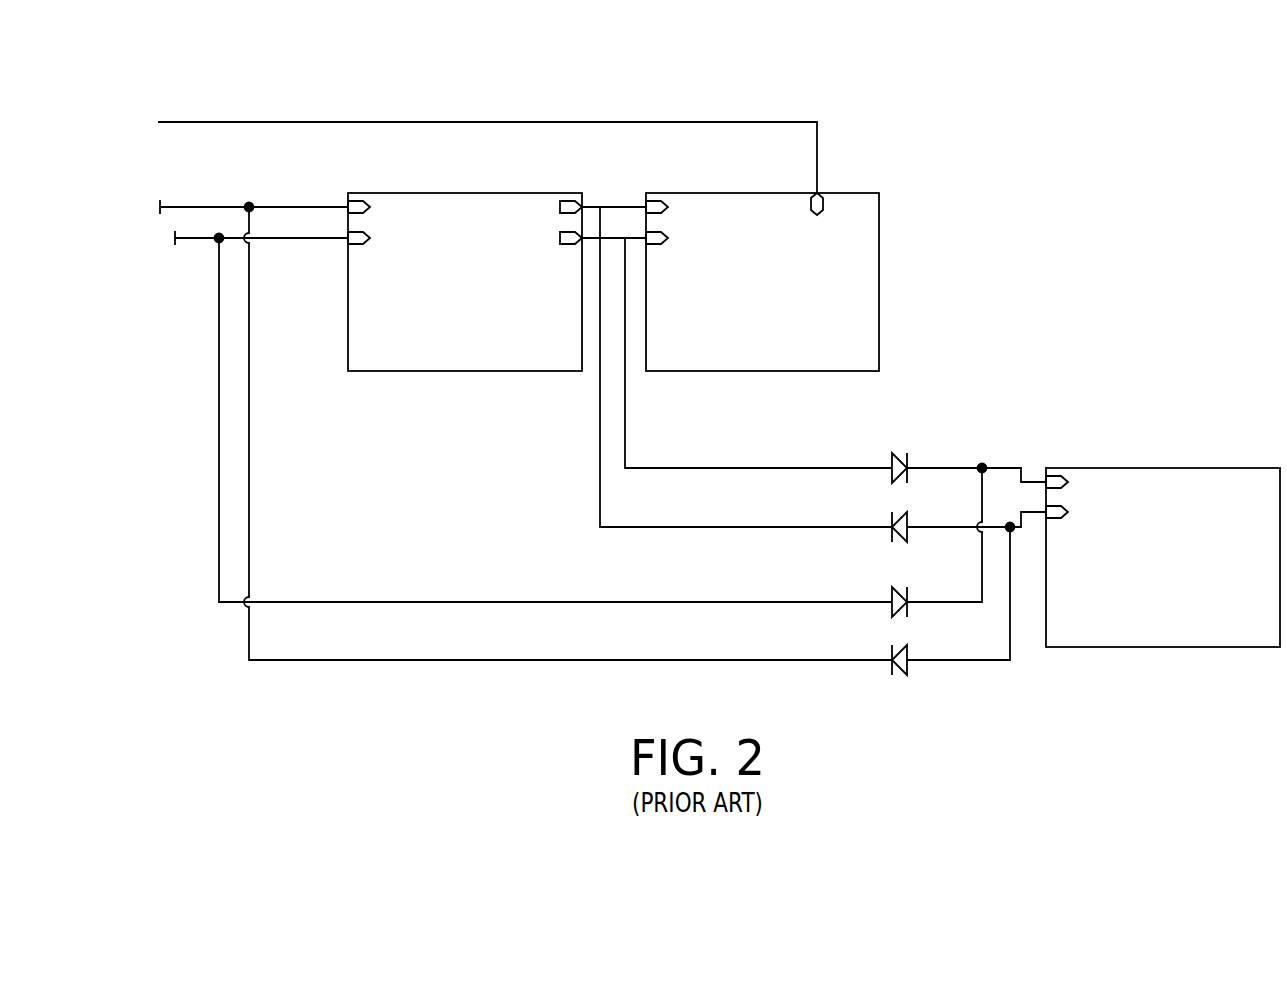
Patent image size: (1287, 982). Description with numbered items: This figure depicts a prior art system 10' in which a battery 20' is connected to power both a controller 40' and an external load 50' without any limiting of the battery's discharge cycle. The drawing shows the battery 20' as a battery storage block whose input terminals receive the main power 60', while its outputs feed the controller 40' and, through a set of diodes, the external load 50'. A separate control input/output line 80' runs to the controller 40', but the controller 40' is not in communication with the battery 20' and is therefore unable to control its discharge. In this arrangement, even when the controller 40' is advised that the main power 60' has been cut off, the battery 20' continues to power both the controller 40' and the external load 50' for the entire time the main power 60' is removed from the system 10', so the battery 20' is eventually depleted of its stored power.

The prior art system 10' is at (667, 365).
The battery 20' is at (465, 255).
The controller 40' is at (762, 255).
The external load 50' is at (1162, 531).
The main power 60' is at (473, 417).
The control I/O line 80' is at (475, 132).